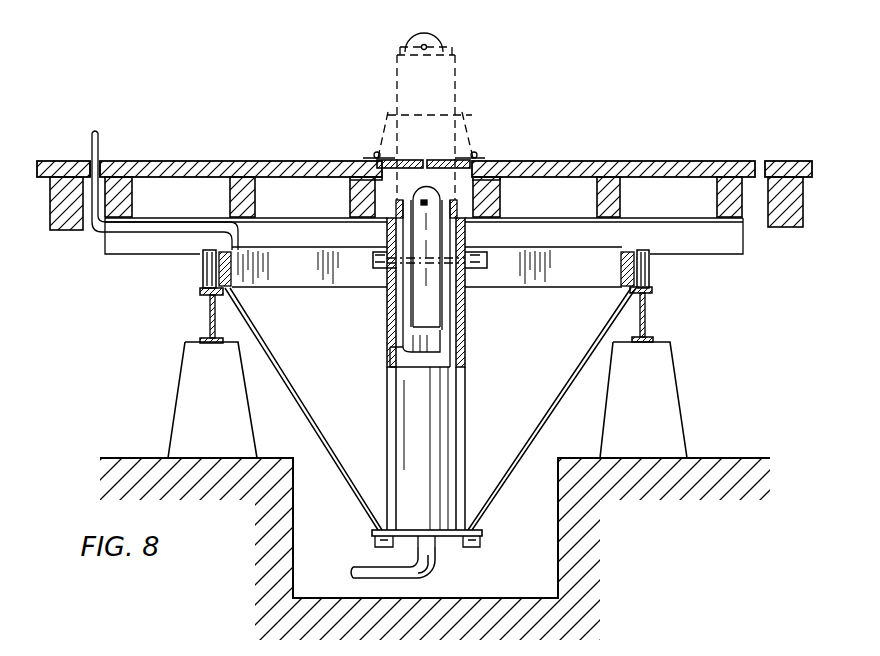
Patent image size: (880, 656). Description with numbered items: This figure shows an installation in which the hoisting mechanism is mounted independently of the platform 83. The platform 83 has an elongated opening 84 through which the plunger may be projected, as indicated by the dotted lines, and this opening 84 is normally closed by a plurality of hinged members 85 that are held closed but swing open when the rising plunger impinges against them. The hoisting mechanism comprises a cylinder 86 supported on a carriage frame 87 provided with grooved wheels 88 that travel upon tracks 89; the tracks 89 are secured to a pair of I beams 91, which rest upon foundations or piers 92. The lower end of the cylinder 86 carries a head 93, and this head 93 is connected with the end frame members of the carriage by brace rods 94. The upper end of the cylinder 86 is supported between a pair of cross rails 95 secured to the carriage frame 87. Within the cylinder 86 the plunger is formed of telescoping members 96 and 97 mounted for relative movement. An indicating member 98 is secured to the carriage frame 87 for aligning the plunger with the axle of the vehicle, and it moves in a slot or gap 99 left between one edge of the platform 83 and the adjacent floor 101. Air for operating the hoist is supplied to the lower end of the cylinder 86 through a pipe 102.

The platform 83 is at (673, 159).
The elongated opening 84 is at (473, 163).
The hinged members 85 is at (435, 160).
The cylinder 86 is at (453, 398).
The carriage frame 87 is at (553, 288).
The grooved wheels 88 is at (208, 271).
The tracks 89 is at (207, 297).
The I beams 91 is at (208, 326).
The piers 92 is at (190, 388).
The head 93 is at (482, 532).
The brace rods 94 is at (327, 436).
The cross rails 95 is at (378, 269).
The telescoping member 96 is at (457, 68).
The telescoping member 97 is at (440, 36).
The indicating member 98 is at (100, 137).
The slot or gap 99 is at (100, 170).
The floor 101 is at (58, 163).
The pipe 102 is at (373, 578).